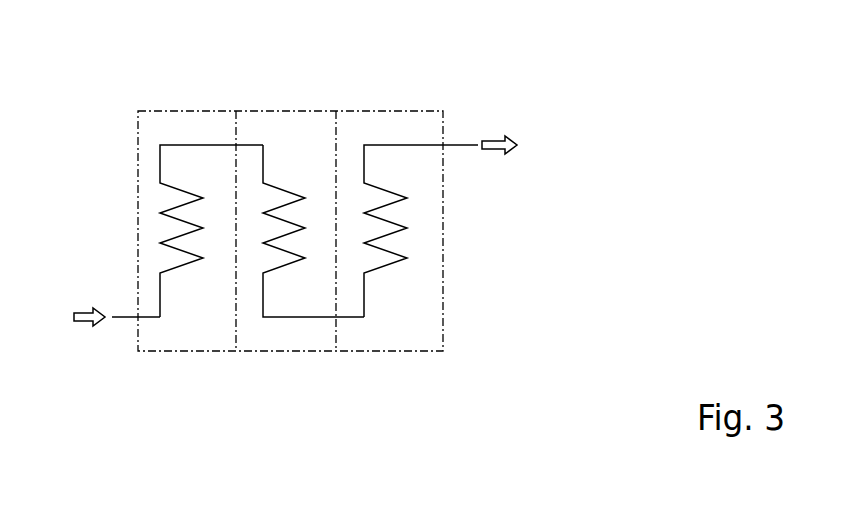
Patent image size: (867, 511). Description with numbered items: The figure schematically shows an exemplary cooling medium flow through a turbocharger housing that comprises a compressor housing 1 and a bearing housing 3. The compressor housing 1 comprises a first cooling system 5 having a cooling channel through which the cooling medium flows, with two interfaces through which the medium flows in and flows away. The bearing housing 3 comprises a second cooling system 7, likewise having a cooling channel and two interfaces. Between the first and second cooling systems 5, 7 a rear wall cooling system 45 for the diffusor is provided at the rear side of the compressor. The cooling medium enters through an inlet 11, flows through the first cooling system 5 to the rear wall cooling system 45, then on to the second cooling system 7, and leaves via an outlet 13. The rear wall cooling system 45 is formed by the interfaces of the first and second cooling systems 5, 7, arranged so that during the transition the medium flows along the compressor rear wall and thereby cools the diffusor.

The compressor housing 1 is at (200, 110).
The bearing housing 3 is at (386, 110).
The first cooling system 5 is at (165, 225).
The rear wall cooling system 45 is at (283, 268).
The second cooling system 7 is at (390, 220).
The inlet 11 is at (135, 320).
The outlet 13 is at (447, 142).